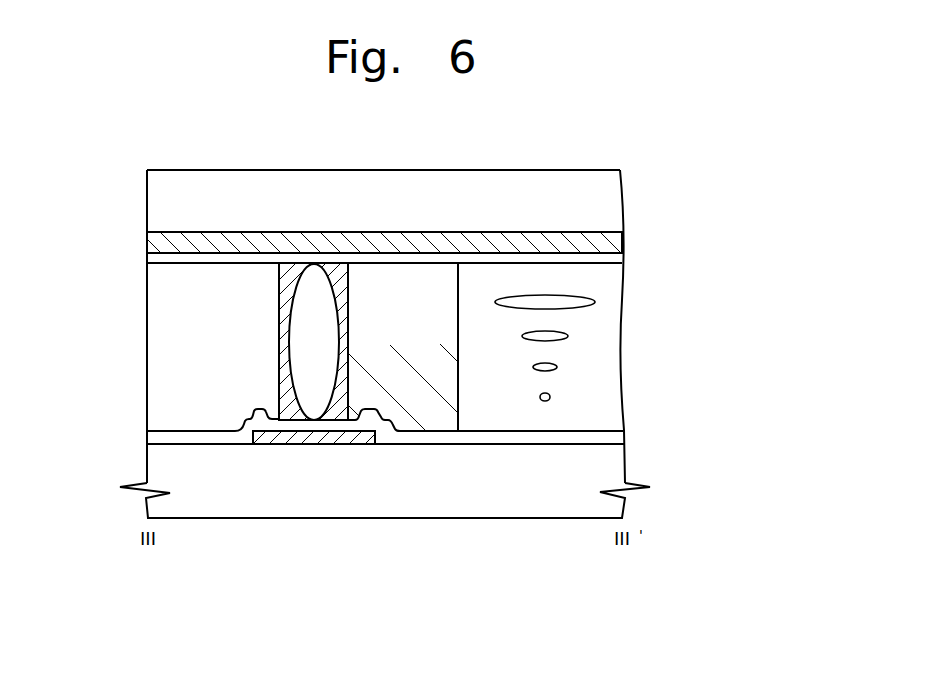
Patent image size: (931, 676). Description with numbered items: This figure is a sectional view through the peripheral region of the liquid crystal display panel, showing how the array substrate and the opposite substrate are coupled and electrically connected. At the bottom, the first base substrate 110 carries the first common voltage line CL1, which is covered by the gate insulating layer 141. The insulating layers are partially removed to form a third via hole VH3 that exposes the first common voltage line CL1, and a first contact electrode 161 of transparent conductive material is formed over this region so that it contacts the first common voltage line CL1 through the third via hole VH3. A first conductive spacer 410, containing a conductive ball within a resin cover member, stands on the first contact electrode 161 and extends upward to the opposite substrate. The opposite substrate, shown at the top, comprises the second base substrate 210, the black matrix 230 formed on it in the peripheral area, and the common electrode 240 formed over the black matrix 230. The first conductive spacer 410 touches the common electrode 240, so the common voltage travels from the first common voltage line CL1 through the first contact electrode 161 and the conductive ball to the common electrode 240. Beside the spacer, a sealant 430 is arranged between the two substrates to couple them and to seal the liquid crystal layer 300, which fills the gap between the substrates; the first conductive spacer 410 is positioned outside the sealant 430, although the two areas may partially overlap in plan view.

The second base substrate 210 is at (608, 201).
The black matrix 230 is at (608, 245).
The common electrode 240 is at (608, 261).
The liquid crystal layer 300 is at (603, 350).
The first conductive spacer 410 is at (283, 290).
The sealant 430 is at (413, 408).
The third via hole VH3 is at (274, 410).
The first contact electrode 161 is at (267, 432).
The first common voltage line CL1 is at (326, 433).
The gate insulating layer 141 is at (615, 437).
The first base substrate 110 is at (615, 468).